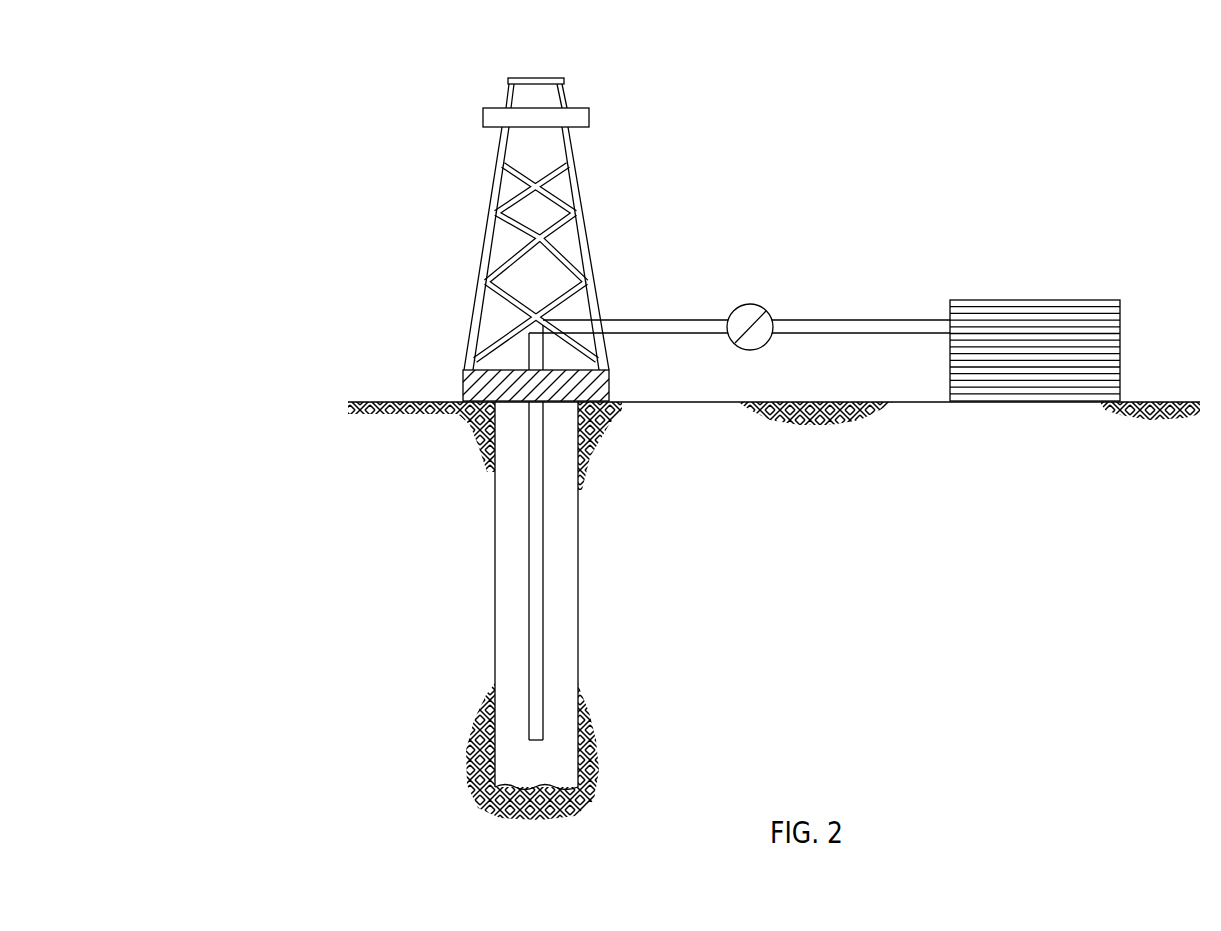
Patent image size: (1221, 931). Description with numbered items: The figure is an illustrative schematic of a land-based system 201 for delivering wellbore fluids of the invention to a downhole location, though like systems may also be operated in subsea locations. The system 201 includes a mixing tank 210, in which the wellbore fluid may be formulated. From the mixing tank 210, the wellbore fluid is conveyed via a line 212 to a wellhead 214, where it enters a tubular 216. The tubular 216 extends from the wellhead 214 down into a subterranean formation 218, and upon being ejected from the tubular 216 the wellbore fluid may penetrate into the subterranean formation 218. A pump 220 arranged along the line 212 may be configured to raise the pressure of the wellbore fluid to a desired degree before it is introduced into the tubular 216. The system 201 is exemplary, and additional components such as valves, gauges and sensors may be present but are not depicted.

The system 201 is at (342, 82).
The mixing tank 210 is at (1098, 303).
The line 212 is at (665, 320).
The wellhead 214 is at (463, 387).
The tubular 216 is at (543, 517).
The subterranean formation 218 is at (426, 600).
The pump 220 is at (758, 303).